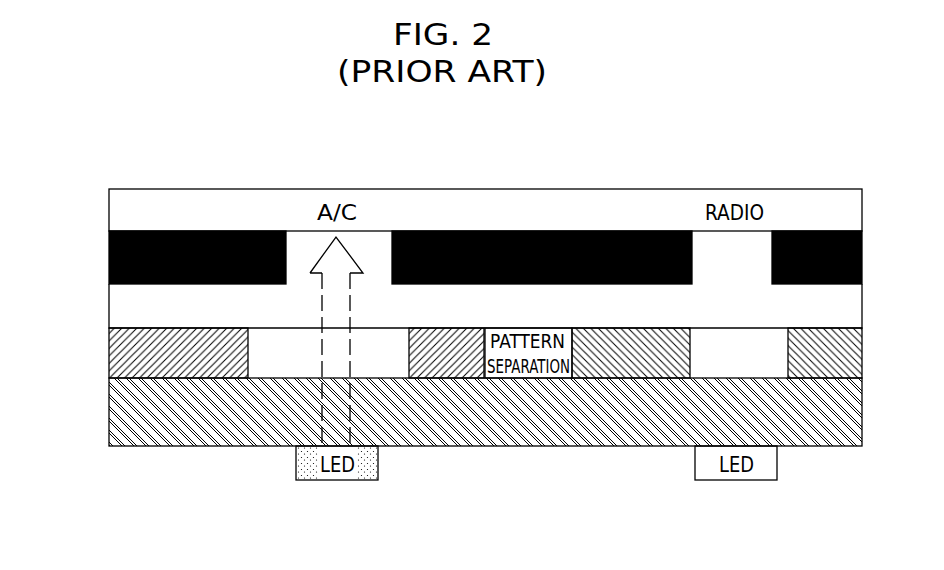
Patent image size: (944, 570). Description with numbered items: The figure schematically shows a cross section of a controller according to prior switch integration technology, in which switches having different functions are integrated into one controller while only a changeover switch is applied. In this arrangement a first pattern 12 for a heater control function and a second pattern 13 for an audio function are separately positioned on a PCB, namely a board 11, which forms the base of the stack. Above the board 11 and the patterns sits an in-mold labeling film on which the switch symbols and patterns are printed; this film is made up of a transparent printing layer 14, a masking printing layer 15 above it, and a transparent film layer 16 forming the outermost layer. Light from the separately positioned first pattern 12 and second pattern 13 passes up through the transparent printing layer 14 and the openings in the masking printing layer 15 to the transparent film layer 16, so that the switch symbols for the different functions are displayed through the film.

The board 11 is at (118, 414).
The first pattern 12 is at (435, 340).
The second pattern 13 is at (675, 355).
The transparent printing layer 14 is at (118, 301).
The masking printing layer 15 is at (108, 257).
The transparent film layer 16 is at (118, 209).